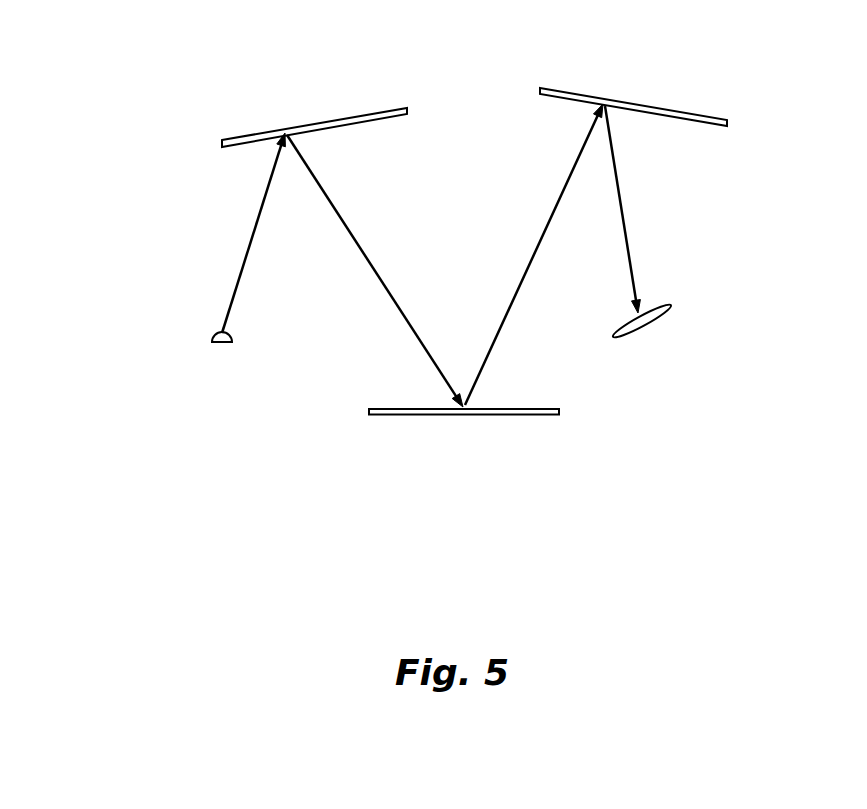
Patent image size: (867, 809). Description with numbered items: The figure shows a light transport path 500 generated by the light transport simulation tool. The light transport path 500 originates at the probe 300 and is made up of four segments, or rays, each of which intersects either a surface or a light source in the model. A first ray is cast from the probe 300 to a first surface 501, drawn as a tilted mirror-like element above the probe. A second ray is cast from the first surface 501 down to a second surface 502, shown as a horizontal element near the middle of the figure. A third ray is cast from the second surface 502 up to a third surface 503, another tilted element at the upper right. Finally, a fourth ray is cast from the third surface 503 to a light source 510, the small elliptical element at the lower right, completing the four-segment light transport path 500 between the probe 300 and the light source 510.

The probe 300 is at (212, 335).
The light transport path 500 is at (258, 220).
The first surface 501 is at (318, 123).
The second surface 502 is at (502, 415).
The third surface 503 is at (633, 102).
The light source 510 is at (650, 327).